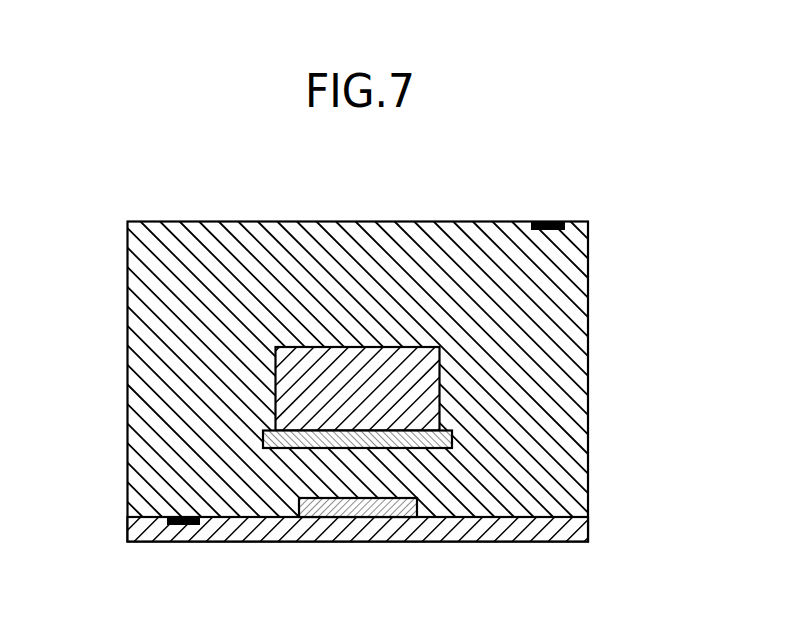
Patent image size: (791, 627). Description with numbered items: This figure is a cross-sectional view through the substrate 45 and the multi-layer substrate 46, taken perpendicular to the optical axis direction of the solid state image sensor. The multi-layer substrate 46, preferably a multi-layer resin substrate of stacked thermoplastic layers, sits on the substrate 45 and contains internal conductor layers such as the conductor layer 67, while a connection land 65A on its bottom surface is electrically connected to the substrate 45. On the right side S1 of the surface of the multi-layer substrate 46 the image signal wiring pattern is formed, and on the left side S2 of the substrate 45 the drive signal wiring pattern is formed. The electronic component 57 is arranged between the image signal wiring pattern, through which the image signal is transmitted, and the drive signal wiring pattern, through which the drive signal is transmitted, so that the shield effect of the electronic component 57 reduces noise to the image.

The multi-layer substrate 46 is at (588, 310).
The substrate 45 is at (588, 533).
The electronic component 57 is at (440, 385).
The conductor layer 67 is at (452, 438).
The connection land 65A is at (358, 508).
The right side S1 is at (545, 222).
The left side S2 is at (165, 522).